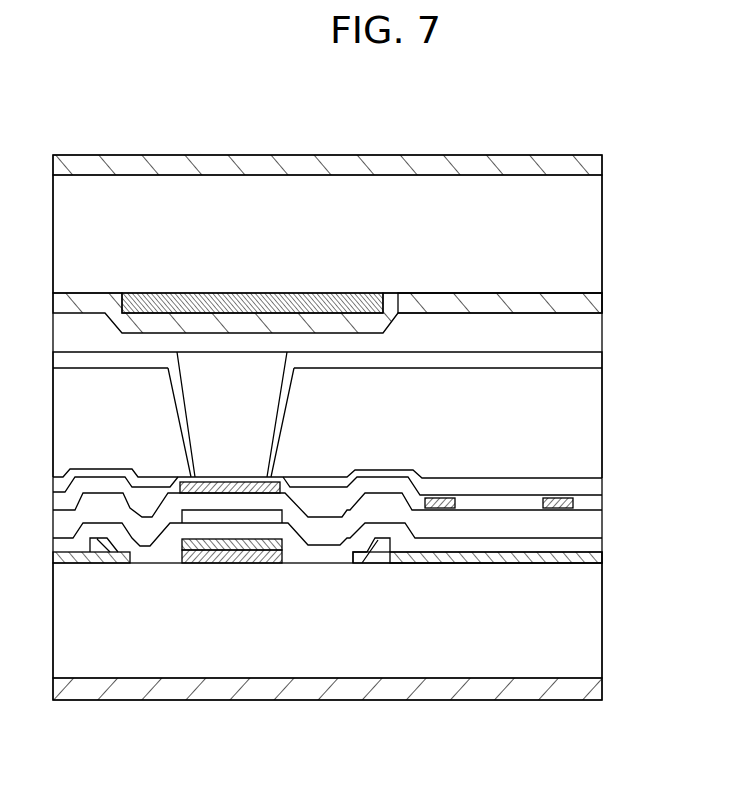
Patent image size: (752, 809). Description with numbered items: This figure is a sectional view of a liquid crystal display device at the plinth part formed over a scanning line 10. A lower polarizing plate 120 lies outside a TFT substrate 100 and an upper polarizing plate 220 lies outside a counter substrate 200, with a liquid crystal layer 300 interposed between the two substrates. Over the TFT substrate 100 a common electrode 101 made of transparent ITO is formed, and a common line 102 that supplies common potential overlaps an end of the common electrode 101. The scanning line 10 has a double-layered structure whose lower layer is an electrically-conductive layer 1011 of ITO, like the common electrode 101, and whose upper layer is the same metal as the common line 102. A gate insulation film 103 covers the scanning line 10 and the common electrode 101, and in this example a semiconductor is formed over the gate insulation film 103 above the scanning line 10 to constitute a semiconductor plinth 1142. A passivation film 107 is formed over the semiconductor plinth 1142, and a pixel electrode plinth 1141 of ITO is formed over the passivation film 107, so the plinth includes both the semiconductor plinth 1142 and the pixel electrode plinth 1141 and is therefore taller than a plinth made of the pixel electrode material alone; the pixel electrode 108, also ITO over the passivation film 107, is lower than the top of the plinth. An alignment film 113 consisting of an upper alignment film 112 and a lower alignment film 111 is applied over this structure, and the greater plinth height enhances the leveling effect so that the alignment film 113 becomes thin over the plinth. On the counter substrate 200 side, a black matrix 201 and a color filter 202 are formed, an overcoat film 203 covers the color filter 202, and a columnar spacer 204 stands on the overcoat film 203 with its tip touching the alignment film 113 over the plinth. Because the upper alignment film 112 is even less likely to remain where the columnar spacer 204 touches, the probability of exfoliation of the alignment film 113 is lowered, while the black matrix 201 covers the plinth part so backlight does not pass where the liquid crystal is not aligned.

The upper polarizing plate 220 is at (582, 163).
The counter substrate 200 is at (580, 230).
The overcoat film 203 is at (580, 331).
The black matrix 201 is at (258, 303).
The color filter 202 is at (445, 300).
The alignment film 113 is at (590, 362).
The liquid crystal layer 300 is at (580, 420).
The columnar spacer 204 is at (250, 407).
The upper alignment film 112 is at (593, 487).
The lower alignment film 111 is at (590, 500).
The passivation film 107 is at (588, 524).
The pixel electrode plinth 1141 is at (228, 481).
The pixel electrode 108 is at (445, 498).
The scanning line 10 is at (196, 563).
The semiconductor plinth 1142 is at (225, 517).
The electrically-conductive layer 1011 is at (265, 562).
The gate insulation film 103 is at (588, 547).
The common electrode 101 is at (467, 562).
The common line 102 is at (118, 563).
The TFT substrate 100 is at (580, 622).
The lower polarizing plate 120 is at (590, 688).